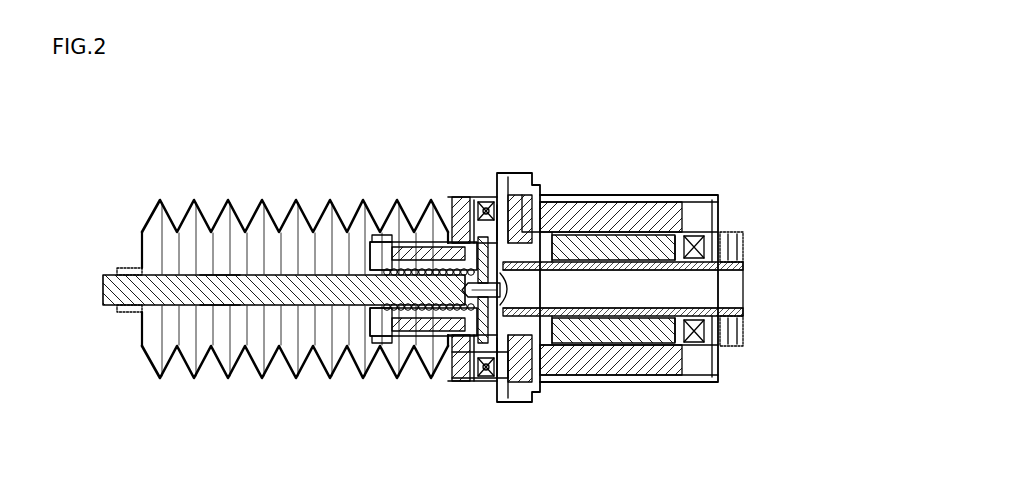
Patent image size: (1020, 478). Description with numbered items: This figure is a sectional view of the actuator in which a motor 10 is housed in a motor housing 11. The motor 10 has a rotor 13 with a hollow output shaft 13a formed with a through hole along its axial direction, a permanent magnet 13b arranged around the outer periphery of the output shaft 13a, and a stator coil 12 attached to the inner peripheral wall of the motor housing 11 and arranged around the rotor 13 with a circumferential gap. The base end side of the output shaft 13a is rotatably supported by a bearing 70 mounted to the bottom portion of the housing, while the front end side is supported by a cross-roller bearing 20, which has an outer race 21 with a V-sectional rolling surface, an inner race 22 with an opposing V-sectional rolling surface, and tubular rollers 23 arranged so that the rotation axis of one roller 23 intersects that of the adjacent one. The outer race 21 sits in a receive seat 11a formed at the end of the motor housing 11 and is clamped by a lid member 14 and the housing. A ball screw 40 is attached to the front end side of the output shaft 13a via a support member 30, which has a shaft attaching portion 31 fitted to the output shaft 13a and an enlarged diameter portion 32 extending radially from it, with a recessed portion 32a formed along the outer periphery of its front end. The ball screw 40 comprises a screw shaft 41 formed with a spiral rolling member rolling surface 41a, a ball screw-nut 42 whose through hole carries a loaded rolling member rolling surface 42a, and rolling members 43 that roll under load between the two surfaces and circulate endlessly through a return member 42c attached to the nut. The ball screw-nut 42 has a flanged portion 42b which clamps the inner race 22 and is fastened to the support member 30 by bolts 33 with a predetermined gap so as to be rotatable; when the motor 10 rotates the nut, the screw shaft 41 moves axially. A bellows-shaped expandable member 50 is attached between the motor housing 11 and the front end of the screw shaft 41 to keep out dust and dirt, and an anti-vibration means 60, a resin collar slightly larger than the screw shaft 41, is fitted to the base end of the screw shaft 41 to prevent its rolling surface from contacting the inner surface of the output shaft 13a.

The motor 10 is at (650, 215).
The motor housing 11 is at (609, 273).
The receive seat 11a is at (508, 190).
The stator coil 12 is at (603, 215).
The rotor 13 is at (675, 304).
The hollow output shaft 13a is at (745, 300).
The permanent magnet 13b is at (745, 337).
The lid member 14 is at (455, 200).
The cross-roller bearing 20 is at (461, 271).
The outer race 21 is at (484, 381).
The inner race 22 is at (456, 378).
The tubular roller 23 is at (482, 202).
The support member 30 is at (557, 312).
The shaft attaching portion 31 is at (586, 383).
The enlarged diameter portion 32 is at (517, 411).
The recessed portion 32a is at (492, 392).
The bolts 33 is at (452, 200).
The ball screw 40 is at (385, 372).
The screw shaft 41 is at (120, 270).
The rolling member rolling surface 41a is at (218, 372).
The ball screw-nut 42 is at (384, 306).
The loaded rolling member rolling surface 42a is at (352, 202).
The flanged portion 42b is at (432, 372).
The return member 42c is at (381, 200).
The rolling members 43 is at (418, 372).
The expandable member 50 is at (160, 379).
The anti-vibration means 60 is at (642, 383).
The bearing 70 is at (718, 226).